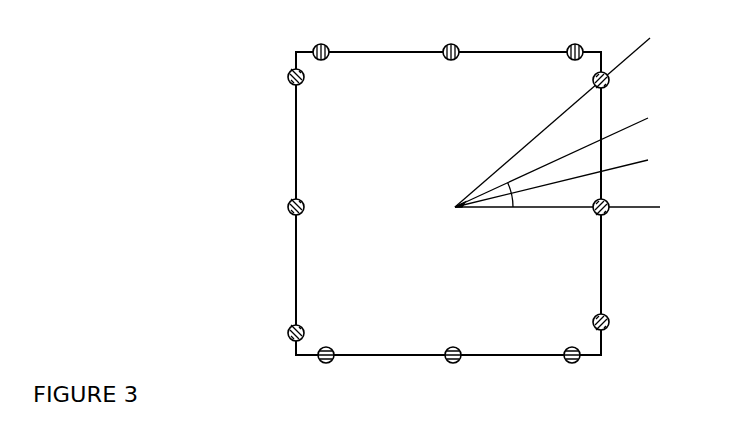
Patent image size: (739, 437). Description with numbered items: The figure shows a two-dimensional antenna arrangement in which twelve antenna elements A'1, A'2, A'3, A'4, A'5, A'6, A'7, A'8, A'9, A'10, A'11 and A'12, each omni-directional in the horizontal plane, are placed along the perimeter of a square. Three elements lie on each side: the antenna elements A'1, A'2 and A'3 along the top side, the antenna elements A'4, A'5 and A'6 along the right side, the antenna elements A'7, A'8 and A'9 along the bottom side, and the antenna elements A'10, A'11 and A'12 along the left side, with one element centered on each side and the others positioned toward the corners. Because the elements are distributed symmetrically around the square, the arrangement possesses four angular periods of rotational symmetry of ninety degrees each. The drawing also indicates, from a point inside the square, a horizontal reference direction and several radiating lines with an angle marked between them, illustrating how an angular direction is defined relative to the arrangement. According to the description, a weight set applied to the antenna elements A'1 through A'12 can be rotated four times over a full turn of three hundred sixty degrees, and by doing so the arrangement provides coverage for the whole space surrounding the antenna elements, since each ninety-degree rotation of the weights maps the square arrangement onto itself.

The antenna element A'1 is at (327, 41).
The antenna element A'2 is at (449, 40).
The antenna element A'3 is at (574, 39).
The antenna element A'4 is at (614, 87).
The antenna element A'5 is at (588, 218).
The antenna element A'6 is at (624, 321).
The antenna element A'7 is at (583, 367).
The antenna element A'8 is at (468, 367).
The antenna element A'9 is at (342, 370).
The antenna element A'10 is at (279, 337).
The antenna element A'11 is at (279, 219).
The antenna element A'12 is at (279, 85).